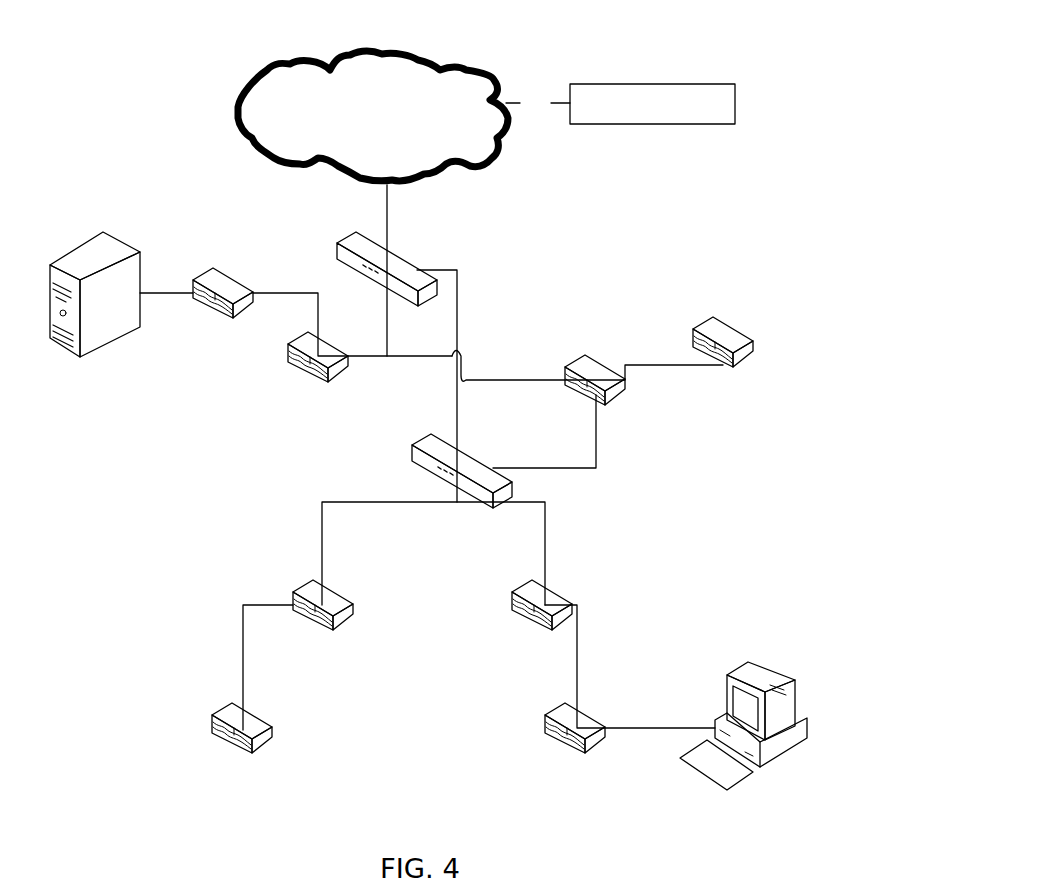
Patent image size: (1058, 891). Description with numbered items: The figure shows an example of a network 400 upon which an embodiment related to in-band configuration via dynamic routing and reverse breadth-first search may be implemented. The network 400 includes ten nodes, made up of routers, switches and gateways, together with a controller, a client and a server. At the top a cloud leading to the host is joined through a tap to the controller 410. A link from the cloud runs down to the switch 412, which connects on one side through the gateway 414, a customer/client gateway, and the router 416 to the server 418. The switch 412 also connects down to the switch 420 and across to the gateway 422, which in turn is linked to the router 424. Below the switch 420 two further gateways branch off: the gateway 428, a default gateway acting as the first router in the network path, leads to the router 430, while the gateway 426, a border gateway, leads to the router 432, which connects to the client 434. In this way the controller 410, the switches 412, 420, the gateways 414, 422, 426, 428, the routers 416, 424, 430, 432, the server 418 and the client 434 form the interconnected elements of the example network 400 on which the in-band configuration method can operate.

The network 400 is at (684, 37).
The controller 410 is at (620, 104).
The switch 412 is at (386, 284).
The gateway 414 is at (317, 371).
The router 416 is at (222, 307).
The server 418 is at (93, 309).
The switch 420 is at (461, 484).
The gateway 422 is at (594, 395).
The router 424 is at (723, 356).
The gateway 426 is at (539, 620).
The gateway 428 is at (324, 620).
The router 430 is at (242, 743).
The router 432 is at (576, 743).
The client 434 is at (743, 741).